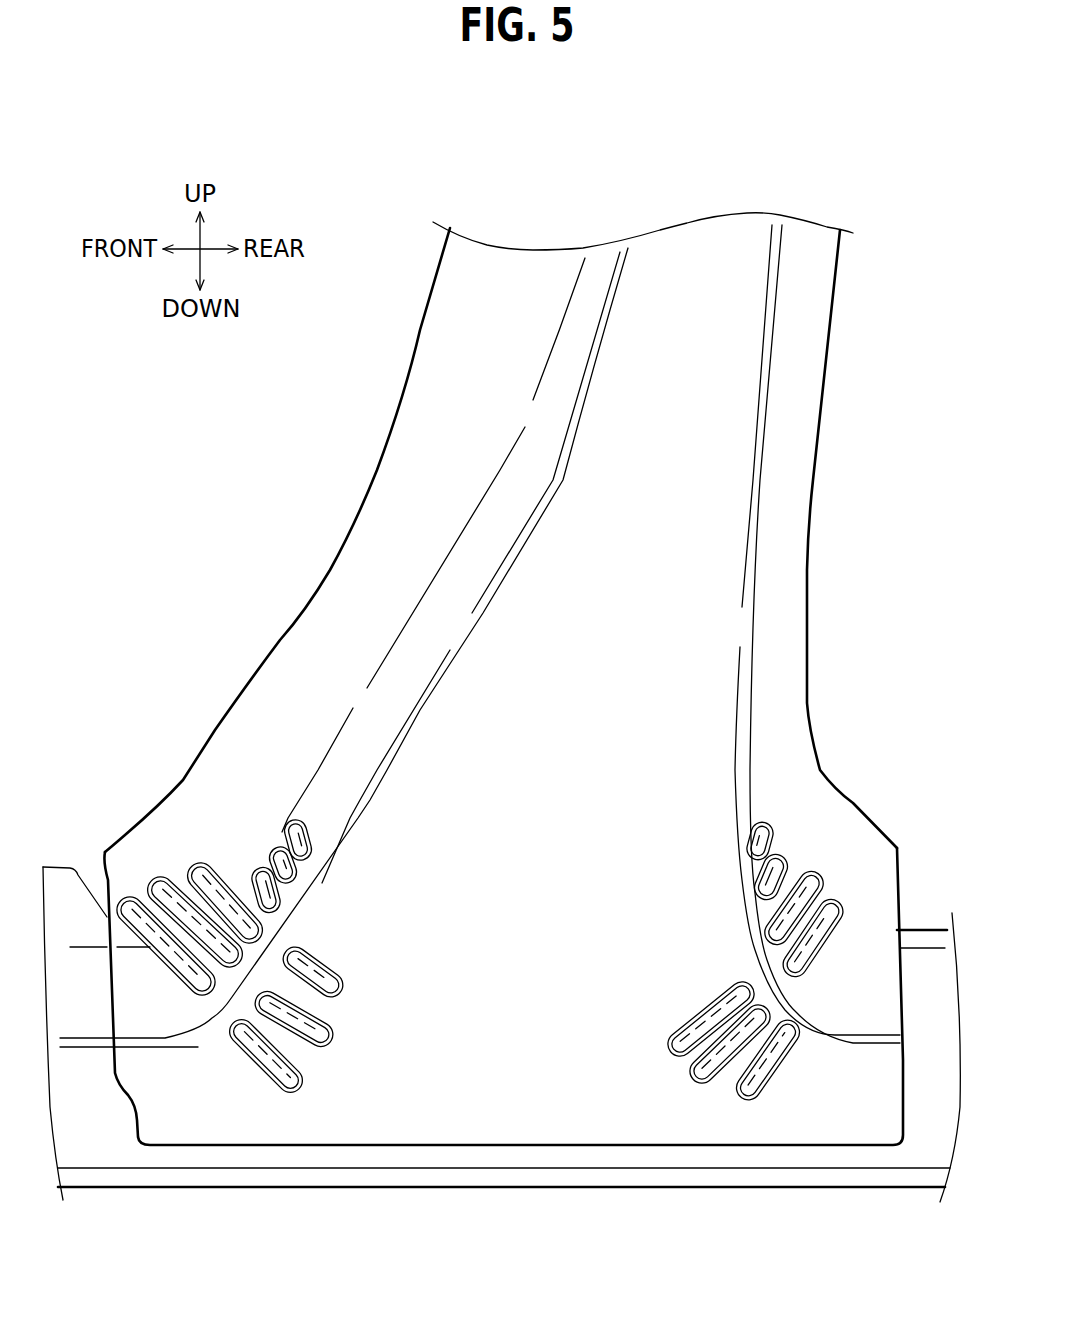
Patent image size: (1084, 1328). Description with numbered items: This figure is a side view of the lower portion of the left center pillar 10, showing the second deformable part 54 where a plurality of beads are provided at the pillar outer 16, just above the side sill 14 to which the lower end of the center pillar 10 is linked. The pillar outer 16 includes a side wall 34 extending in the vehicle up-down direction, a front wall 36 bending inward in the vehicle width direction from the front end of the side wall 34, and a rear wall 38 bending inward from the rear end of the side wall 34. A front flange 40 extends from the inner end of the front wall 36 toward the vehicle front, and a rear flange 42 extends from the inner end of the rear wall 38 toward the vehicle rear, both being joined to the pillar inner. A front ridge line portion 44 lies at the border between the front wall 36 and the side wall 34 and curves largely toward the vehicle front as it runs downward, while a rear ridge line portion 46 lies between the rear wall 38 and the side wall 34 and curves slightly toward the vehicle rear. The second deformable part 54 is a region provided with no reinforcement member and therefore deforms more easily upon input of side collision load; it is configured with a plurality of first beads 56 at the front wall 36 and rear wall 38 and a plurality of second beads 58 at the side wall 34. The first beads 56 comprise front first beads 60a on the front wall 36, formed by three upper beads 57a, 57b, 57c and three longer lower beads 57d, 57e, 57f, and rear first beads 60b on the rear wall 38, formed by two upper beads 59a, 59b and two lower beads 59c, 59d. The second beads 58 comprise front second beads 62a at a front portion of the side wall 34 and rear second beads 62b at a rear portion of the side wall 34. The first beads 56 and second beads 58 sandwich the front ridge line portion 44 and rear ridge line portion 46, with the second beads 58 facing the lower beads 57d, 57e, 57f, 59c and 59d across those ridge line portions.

The center pillar 10 is at (853, 318).
The side sill 14 is at (197, 1187).
The pillar outer 16 is at (372, 438).
The side wall 34 is at (683, 441).
The front wall 36 is at (460, 577).
The rear wall 38 is at (752, 795).
The front flange 40 is at (422, 325).
The rear flange 42 is at (812, 505).
The front ridge line portion 44 is at (407, 723).
The rear ridge line portion 46 is at (752, 577).
The second deformable part 54 is at (548, 1073).
The first beads 56 is at (501, 817).
The bead 57a is at (303, 847).
The bead 57b is at (285, 877).
The bead 57c is at (272, 900).
The bead 57d is at (200, 880).
The bead 57e is at (168, 892).
The bead 57f is at (133, 913).
The second beads 58 is at (515, 1098).
The bead 59a is at (750, 846).
The bead 59b is at (765, 883).
The bead 59c is at (775, 930).
The bead 59d is at (795, 960).
The front first beads 60a is at (228, 867).
The rear first beads 60b is at (802, 857).
The front second beads 62a is at (323, 1065).
The rear second beads 62b is at (722, 1093).